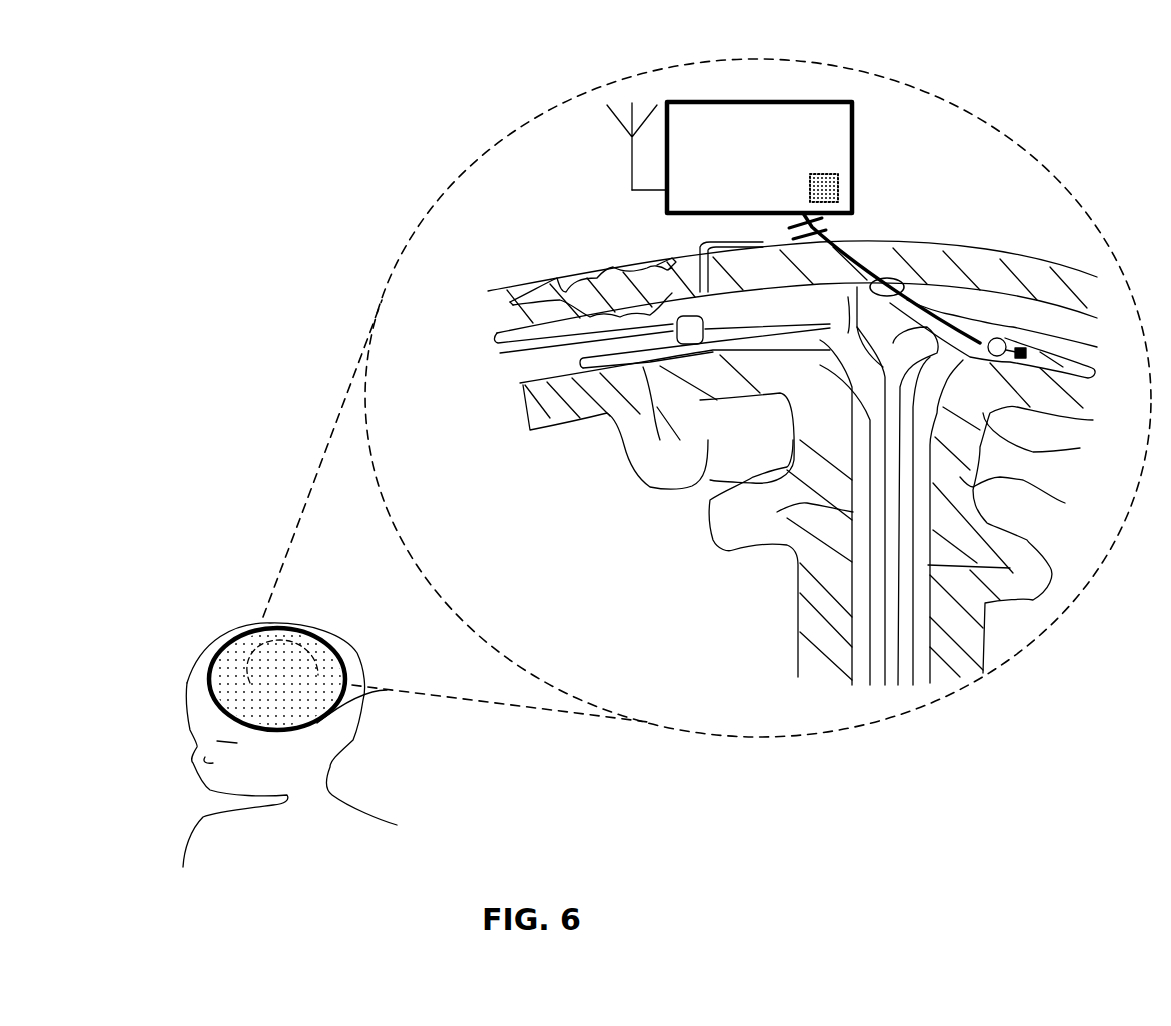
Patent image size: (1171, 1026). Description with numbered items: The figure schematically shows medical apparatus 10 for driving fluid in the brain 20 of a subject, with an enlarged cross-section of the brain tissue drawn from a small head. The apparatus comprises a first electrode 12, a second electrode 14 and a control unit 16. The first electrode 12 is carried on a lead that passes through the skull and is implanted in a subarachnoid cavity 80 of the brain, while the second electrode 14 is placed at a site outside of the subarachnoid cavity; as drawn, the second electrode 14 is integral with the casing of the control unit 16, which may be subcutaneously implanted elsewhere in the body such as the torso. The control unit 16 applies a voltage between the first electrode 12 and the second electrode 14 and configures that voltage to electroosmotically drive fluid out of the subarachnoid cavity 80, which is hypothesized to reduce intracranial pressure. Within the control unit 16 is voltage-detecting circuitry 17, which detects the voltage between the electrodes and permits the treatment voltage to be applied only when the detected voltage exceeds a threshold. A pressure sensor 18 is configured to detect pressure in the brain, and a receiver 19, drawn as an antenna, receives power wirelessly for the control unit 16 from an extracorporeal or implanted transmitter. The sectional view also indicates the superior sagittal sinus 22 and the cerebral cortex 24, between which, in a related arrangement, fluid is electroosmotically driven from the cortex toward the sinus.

The medical apparatus 10 is at (537, 182).
The first electrode 12 is at (868, 278).
The second electrode 14 is at (667, 215).
The control unit 16 is at (817, 102).
The voltage-detecting circuitry 17 is at (838, 180).
The pressure sensor 18 is at (1004, 342).
The receiver 19 is at (627, 167).
The brain 20 is at (400, 690).
The superior sagittal sinus 22 is at (880, 278).
The cerebral cortex 24 is at (1026, 502).
The subarachnoid cavity 80 is at (1048, 442).